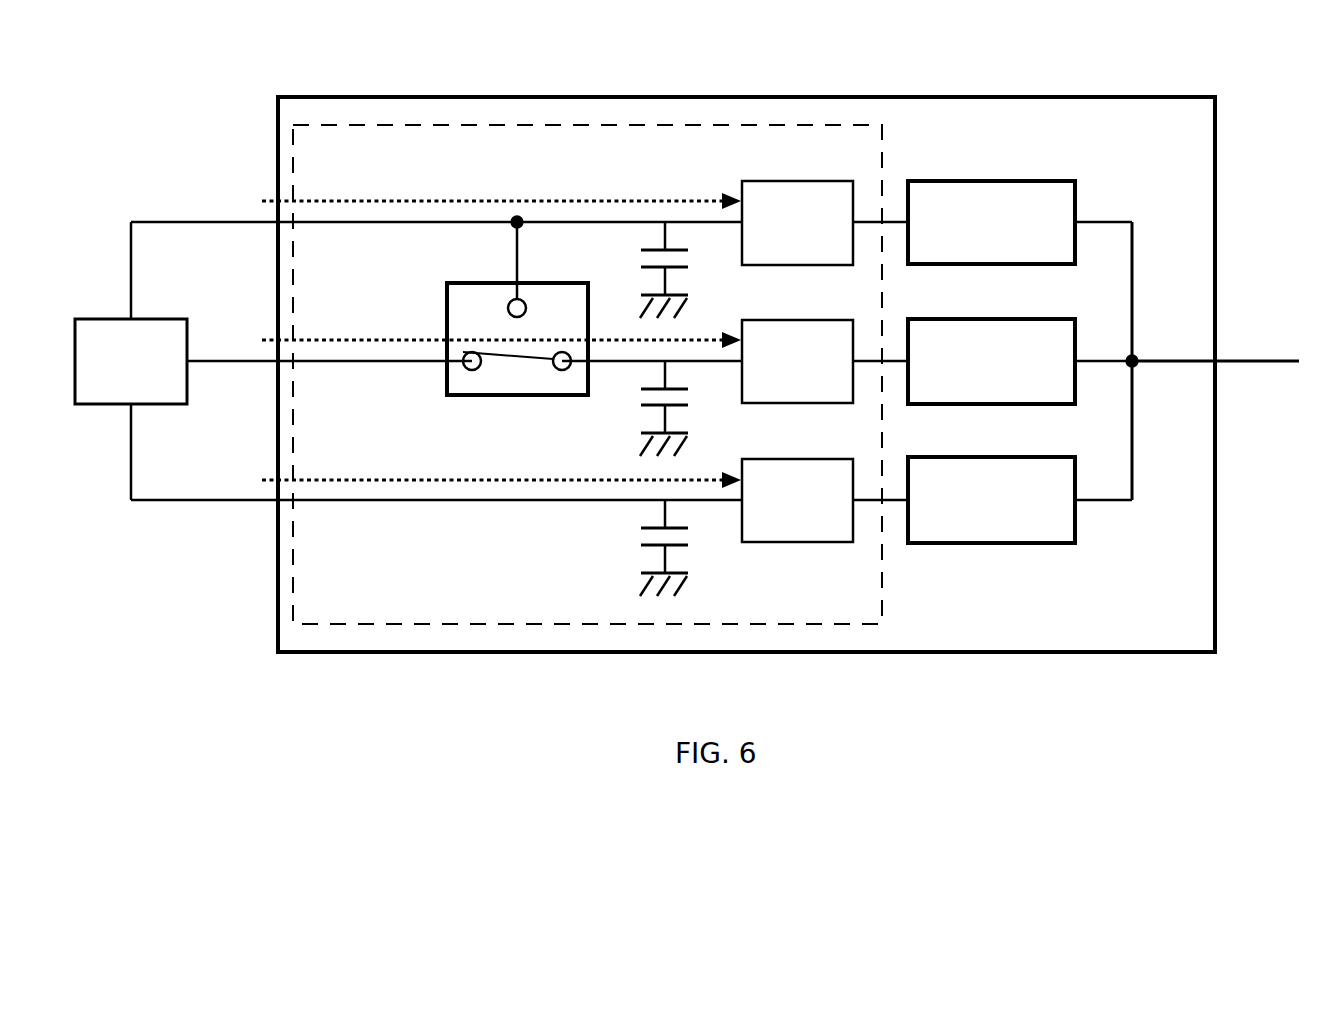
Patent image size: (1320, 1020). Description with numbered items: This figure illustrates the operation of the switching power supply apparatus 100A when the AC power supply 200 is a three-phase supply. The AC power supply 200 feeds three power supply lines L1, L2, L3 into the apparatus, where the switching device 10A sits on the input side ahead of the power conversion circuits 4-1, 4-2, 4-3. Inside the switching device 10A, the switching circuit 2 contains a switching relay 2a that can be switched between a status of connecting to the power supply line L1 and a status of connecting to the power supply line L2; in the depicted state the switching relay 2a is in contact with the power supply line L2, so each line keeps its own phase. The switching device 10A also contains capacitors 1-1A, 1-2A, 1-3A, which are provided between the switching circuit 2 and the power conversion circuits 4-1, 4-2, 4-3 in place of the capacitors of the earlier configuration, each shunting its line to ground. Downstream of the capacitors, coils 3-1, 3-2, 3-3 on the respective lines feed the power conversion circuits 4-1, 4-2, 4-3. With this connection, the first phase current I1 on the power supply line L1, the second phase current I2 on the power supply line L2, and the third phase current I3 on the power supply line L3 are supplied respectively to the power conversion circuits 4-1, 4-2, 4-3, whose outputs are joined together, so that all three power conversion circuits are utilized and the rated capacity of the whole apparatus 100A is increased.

The switching power supply apparatus 100A is at (1141, 97).
The switching device 10A is at (797, 125).
The AC power supply 200 is at (115, 318).
The power supply line L1 is at (245, 222).
The power supply line L2 is at (245, 361).
The power supply line L3 is at (245, 500).
The current I1 is at (366, 201).
The current I2 is at (366, 340).
The current I3 is at (366, 480).
The switching circuit 2 is at (517, 330).
The switching relay 2a is at (512, 358).
The capacitor 1-1A is at (688, 267).
The capacitor 1-2A is at (688, 405).
The capacitor 1-3A is at (688, 545).
The coil 3-1 is at (800, 265).
The coil 3-2 is at (800, 403).
The coil 3-3 is at (800, 542).
The power conversion circuit 4-1 is at (1000, 264).
The power conversion circuit 4-2 is at (1000, 404).
The power conversion circuit 4-3 is at (1000, 543).